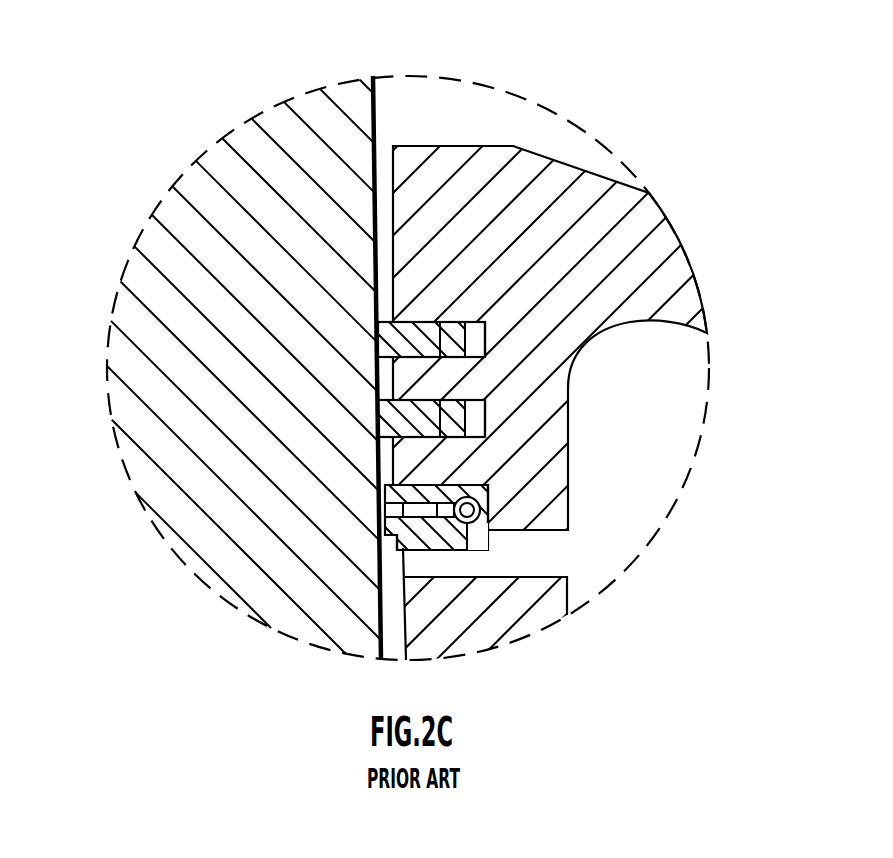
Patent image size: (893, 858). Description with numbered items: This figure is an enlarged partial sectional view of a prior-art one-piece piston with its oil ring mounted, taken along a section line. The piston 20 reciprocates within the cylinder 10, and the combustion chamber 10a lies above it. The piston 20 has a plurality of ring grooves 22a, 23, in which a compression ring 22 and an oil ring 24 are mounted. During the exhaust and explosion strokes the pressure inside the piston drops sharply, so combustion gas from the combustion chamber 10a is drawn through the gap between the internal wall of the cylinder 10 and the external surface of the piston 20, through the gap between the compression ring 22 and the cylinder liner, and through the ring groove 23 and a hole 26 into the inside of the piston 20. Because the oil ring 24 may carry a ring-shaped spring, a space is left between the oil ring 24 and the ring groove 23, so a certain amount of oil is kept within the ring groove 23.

The cylinder 10 is at (152, 480).
The combustion chamber 10a is at (460, 92).
The piston 20 is at (490, 630).
The compression ring 22 is at (378, 428).
The ring groove 22a is at (477, 416).
The ring groove 23 is at (490, 487).
The oil ring 24 is at (384, 530).
The hole 26 is at (543, 557).